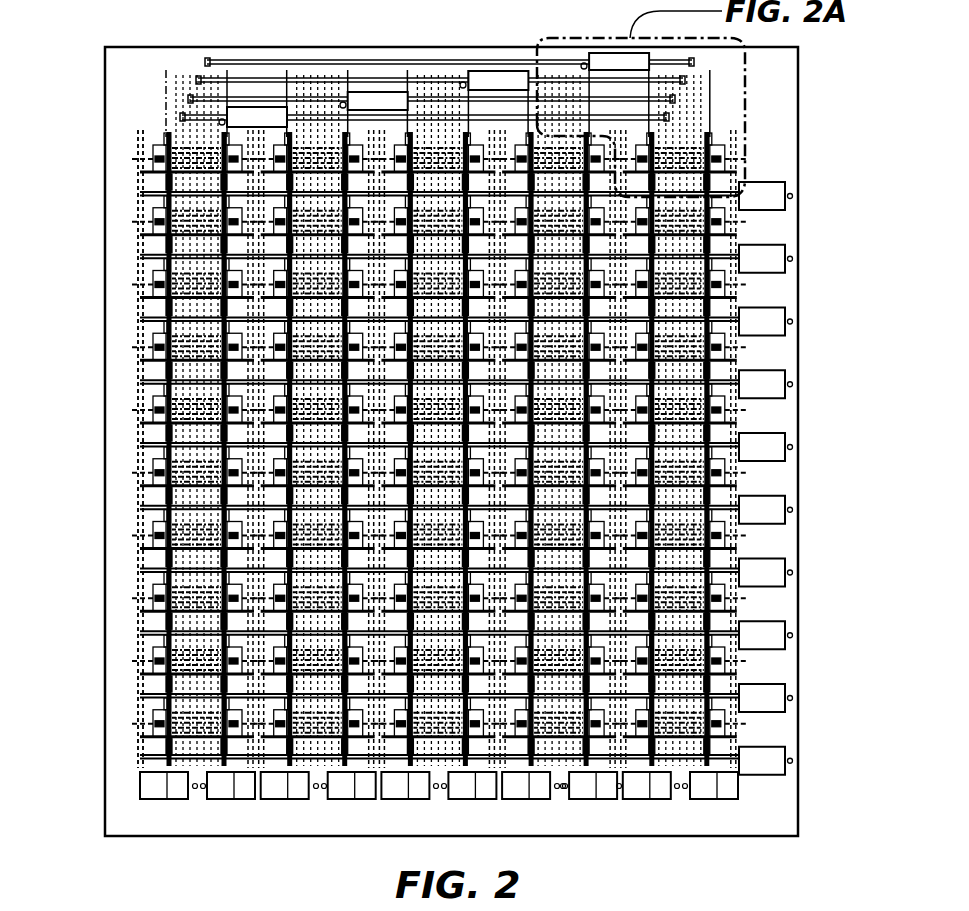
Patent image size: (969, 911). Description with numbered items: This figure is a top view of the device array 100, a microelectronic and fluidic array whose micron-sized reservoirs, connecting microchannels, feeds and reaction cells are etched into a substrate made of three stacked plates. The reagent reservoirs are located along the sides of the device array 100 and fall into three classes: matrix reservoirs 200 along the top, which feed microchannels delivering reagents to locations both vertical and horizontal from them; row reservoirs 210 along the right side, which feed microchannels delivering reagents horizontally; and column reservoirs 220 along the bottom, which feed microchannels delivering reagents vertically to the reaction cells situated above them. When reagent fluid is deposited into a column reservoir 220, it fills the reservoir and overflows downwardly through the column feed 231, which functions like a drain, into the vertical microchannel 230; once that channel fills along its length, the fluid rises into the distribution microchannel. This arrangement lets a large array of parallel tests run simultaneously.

The device array 100 is at (92, 128).
The matrix reservoirs 200 is at (365, 92).
The row reservoirs 210 is at (783, 313).
The column reservoirs 220 is at (602, 797).
The vertical microchannel 230 is at (138, 758).
The column feed 231 is at (140, 787).